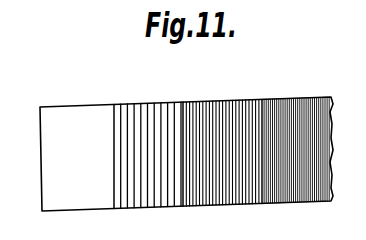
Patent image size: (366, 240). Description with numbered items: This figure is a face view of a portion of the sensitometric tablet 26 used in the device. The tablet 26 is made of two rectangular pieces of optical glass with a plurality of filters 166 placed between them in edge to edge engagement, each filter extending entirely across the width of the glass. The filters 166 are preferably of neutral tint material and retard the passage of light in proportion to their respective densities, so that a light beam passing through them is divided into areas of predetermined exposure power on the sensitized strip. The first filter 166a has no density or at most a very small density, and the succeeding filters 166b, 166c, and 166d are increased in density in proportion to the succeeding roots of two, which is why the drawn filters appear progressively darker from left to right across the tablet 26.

The sensitometric tablet 26 is at (57, 104).
The filters 166 is at (163, 190).
The first filter 166a is at (77, 128).
The second filter 166b is at (147, 115).
The third filter 166c is at (221, 110).
The fourth filter 166d is at (288, 110).